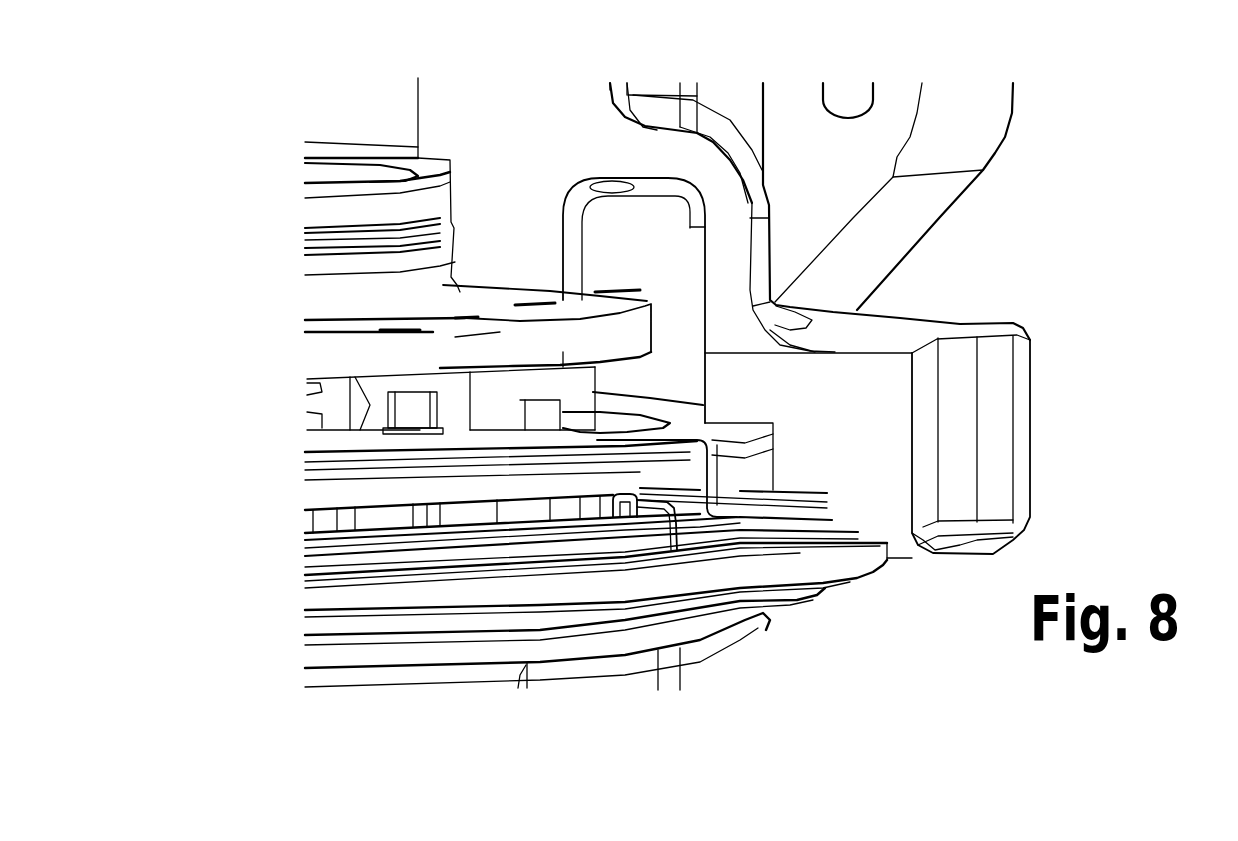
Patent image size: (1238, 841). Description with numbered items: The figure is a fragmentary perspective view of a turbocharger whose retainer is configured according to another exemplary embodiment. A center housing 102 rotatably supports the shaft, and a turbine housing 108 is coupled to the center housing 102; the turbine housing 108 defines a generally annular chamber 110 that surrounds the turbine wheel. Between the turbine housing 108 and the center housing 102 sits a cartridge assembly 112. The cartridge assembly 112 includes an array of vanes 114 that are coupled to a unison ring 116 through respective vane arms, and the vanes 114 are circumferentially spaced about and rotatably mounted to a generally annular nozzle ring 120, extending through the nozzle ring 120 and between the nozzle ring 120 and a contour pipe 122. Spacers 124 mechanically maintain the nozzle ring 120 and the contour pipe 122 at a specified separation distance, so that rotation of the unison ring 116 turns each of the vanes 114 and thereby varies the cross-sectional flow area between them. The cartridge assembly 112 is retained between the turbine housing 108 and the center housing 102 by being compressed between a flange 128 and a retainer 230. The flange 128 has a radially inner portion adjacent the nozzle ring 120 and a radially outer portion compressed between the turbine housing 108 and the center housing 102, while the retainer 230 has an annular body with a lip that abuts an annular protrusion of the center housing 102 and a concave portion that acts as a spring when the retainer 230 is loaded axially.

The center housing 102 is at (628, 625).
The turbine housing 108 is at (867, 433).
The annular chamber 110 is at (796, 253).
The cartridge assembly 112 is at (297, 182).
The vanes 114 is at (515, 273).
The unison ring 116 is at (457, 572).
The nozzle ring 120 is at (596, 623).
The contour pipe 122 is at (382, 154).
The spacers 124 is at (392, 569).
The flange 128 is at (851, 469).
The retainer 230 is at (705, 604).